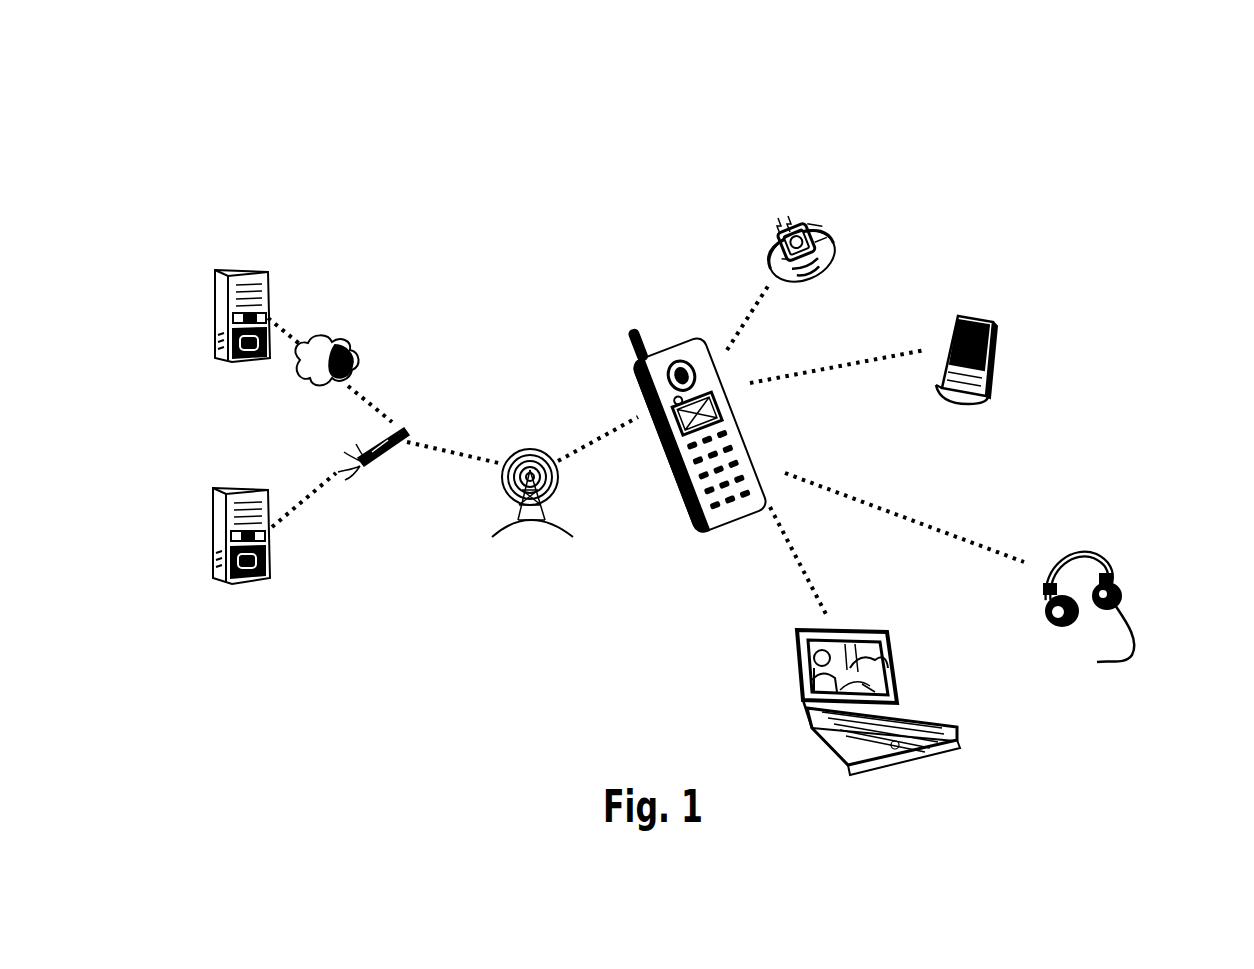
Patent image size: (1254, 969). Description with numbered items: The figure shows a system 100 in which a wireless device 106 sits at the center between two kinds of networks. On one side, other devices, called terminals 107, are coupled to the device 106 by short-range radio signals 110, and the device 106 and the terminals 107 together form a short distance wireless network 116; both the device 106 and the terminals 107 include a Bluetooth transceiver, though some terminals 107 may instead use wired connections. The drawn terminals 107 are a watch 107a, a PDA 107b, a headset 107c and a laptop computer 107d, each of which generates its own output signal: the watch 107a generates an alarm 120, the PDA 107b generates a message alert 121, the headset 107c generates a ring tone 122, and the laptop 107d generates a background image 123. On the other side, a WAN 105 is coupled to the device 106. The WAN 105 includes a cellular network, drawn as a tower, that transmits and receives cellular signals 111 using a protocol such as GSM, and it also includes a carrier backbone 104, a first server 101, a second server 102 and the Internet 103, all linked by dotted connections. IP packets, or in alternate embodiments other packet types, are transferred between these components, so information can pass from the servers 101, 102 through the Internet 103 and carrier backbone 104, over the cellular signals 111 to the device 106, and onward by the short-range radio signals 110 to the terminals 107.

The system 100 is at (705, 132).
The server 101 is at (220, 250).
The server 102 is at (218, 473).
The Internet 103 is at (347, 340).
The carrier backbone 104 is at (390, 453).
The WAN 105 is at (520, 283).
The wireless device 106 is at (675, 458).
The terminals 107 is at (1045, 372).
The watch 107a is at (773, 252).
The PDA 107b is at (958, 317).
The headset 107c is at (1037, 607).
The laptop computer 107d is at (795, 697).
The short-range radio signals 110 is at (875, 450).
The cellular signals 111 is at (585, 440).
The short distance wireless network 116 is at (967, 228).
The alarm 120 is at (788, 223).
The message alert 121 is at (997, 338).
The ring tone 122 is at (1113, 585).
The background image 123 is at (798, 633).